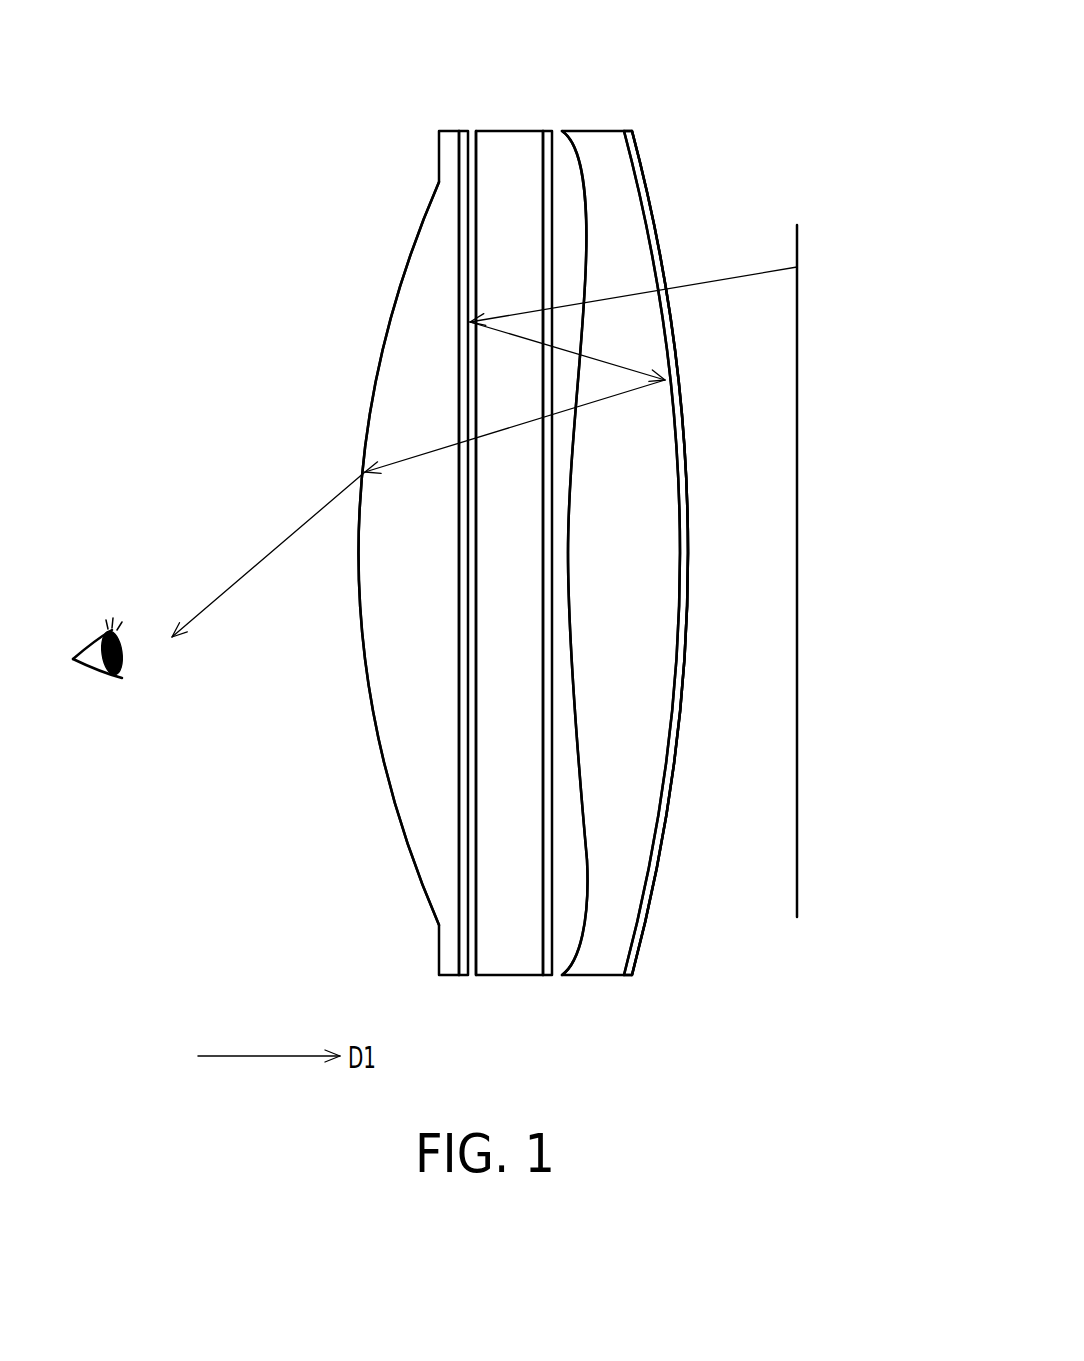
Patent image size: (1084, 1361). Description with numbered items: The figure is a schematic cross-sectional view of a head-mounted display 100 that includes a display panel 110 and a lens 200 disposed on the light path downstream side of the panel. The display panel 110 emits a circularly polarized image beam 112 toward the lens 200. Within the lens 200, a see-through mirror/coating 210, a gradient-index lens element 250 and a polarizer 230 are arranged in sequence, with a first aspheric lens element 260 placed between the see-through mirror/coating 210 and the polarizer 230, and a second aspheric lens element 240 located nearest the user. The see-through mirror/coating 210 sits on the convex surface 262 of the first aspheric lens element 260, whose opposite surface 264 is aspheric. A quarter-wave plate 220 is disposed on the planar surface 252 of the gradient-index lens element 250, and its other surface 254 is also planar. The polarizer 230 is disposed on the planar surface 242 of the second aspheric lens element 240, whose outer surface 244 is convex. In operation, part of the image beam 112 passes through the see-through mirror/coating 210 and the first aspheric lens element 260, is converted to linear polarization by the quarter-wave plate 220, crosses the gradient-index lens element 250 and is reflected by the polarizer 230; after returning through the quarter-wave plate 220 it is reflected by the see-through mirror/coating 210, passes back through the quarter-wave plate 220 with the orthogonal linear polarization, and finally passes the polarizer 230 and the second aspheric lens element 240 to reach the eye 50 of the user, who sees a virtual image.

The eye 50 is at (100, 670).
The head-mounted display 100 is at (548, 528).
The display panel 110 is at (798, 708).
The image beam 112 is at (725, 278).
The lens 200 is at (591, 528).
The see-through mirror/coating 210 is at (633, 155).
The quarter-wave plate 220 is at (547, 155).
The polarizer 230 is at (463, 153).
The second aspheric lens element 240 is at (422, 793).
The surface of second aspheric lens element 242 is at (462, 570).
The surface of second aspheric lens element 244 is at (401, 269).
The gradient-index lens element 250 is at (512, 948).
The surface of gradient-index lens element 252 is at (546, 717).
The surface of gradient-index lens element 254 is at (473, 208).
The first aspheric lens element 260 is at (604, 948).
The surface of first aspheric lens element 262 is at (676, 453).
The surface of first aspheric lens element 264 is at (581, 186).